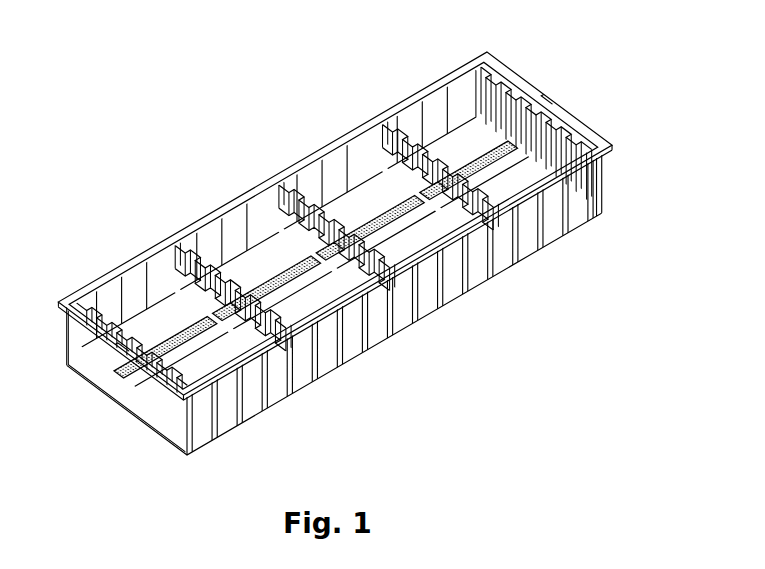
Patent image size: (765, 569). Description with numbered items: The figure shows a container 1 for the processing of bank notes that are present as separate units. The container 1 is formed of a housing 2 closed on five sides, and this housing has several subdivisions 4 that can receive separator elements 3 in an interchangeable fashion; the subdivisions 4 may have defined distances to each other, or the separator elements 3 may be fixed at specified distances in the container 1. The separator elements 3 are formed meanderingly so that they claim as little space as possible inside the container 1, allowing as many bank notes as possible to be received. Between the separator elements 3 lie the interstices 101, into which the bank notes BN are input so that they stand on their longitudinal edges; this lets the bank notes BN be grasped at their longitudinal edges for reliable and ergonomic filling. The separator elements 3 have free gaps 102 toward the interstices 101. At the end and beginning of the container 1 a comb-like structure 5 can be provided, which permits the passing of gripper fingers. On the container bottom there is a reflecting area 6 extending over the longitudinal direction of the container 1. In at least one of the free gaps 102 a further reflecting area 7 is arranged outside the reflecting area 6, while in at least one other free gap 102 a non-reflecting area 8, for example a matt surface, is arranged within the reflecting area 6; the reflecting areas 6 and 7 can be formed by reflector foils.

The container 1 is at (400, 388).
The housing 2 is at (87, 370).
The separator element 3 is at (195, 247).
The subdivision 4 is at (455, 67).
The comb-like structure 5 is at (85, 298).
The reflecting area 6 is at (273, 286).
The reflecting area 7 is at (400, 226).
The non-reflecting area 8 is at (391, 208).
The interstice 101 is at (157, 292).
The free gap 102 is at (266, 403).
The bank notes BN is at (197, 330).